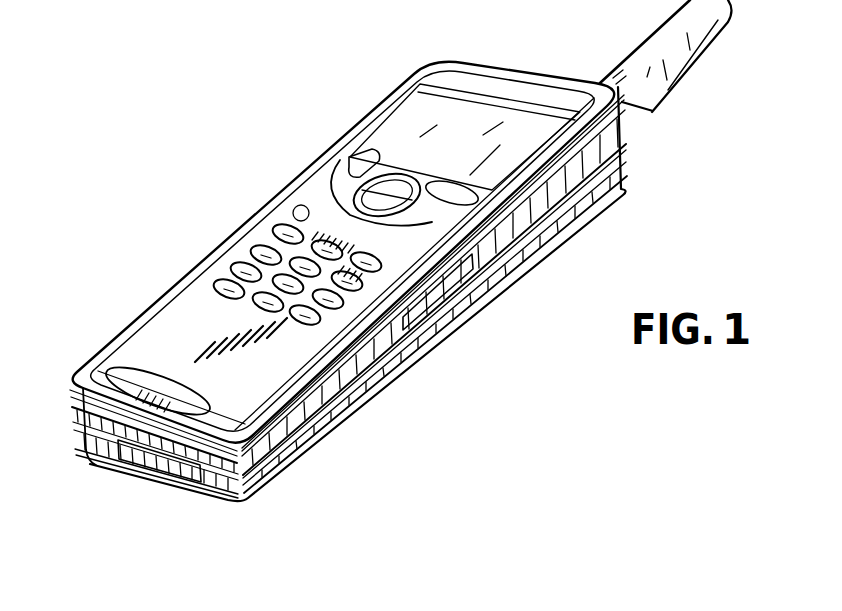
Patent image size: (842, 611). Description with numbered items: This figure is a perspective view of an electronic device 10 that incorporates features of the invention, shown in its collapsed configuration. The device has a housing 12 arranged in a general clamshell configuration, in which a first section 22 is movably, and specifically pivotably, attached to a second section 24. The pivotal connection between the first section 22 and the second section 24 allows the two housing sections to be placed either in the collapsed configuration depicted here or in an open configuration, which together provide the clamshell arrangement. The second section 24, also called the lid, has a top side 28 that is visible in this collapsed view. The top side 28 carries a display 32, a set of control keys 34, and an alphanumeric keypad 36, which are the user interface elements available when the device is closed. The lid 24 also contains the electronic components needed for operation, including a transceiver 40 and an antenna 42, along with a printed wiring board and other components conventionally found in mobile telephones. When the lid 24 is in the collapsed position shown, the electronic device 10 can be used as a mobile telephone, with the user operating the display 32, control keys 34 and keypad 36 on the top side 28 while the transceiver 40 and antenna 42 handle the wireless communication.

The electronic device 10 is at (257, 184).
The housing 12 is at (166, 293).
The first section 22 is at (246, 504).
The second section 24 is at (160, 347).
The top side 28 is at (313, 191).
The display 32 is at (479, 100).
The control keys 34 is at (352, 160).
The alphanumeric keypad 36 is at (253, 238).
The transceiver 40 is at (402, 376).
The antenna 42 is at (677, 58).